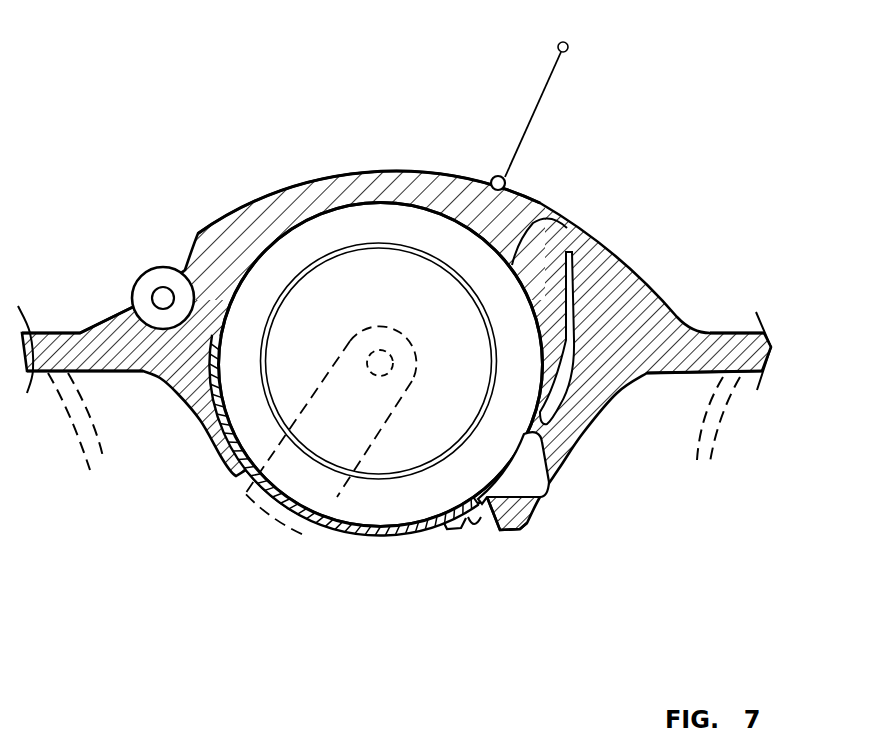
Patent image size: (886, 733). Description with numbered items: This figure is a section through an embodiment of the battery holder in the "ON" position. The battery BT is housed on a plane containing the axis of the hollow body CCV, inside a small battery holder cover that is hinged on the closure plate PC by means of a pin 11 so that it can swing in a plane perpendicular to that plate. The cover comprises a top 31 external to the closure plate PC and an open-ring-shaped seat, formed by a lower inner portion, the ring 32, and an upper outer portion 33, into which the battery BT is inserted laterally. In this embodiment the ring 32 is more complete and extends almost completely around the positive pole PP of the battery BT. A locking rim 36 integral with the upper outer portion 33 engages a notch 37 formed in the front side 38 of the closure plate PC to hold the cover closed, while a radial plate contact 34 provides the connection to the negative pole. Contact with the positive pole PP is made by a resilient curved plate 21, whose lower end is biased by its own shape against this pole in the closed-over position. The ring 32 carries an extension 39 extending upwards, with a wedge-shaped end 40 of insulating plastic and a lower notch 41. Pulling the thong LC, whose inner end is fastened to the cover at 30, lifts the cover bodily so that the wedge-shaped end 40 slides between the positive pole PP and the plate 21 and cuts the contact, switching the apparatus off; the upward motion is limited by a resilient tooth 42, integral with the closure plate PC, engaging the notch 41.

The pin 11 is at (160, 273).
The closure plate PC is at (80, 333).
The ring 32 is at (215, 352).
The radial plate contact 34 is at (243, 497).
The top 31 is at (363, 172).
The battery BT is at (380, 282).
The thong LC is at (540, 87).
The fastening point of thong 30 is at (508, 178).
The upper outer portion 33 is at (547, 203).
The locking rim 36 is at (570, 220).
The notch 37 is at (610, 245).
The front side 38 is at (638, 273).
The resilient curved plate 21 is at (583, 290).
The hollow body CCV is at (718, 423).
The wedge-shaped end 40 is at (537, 467).
The resilient tooth 42 is at (523, 527).
The extension 39 is at (457, 532).
The lower notch 41 is at (477, 525).
The positive pole PP is at (363, 493).